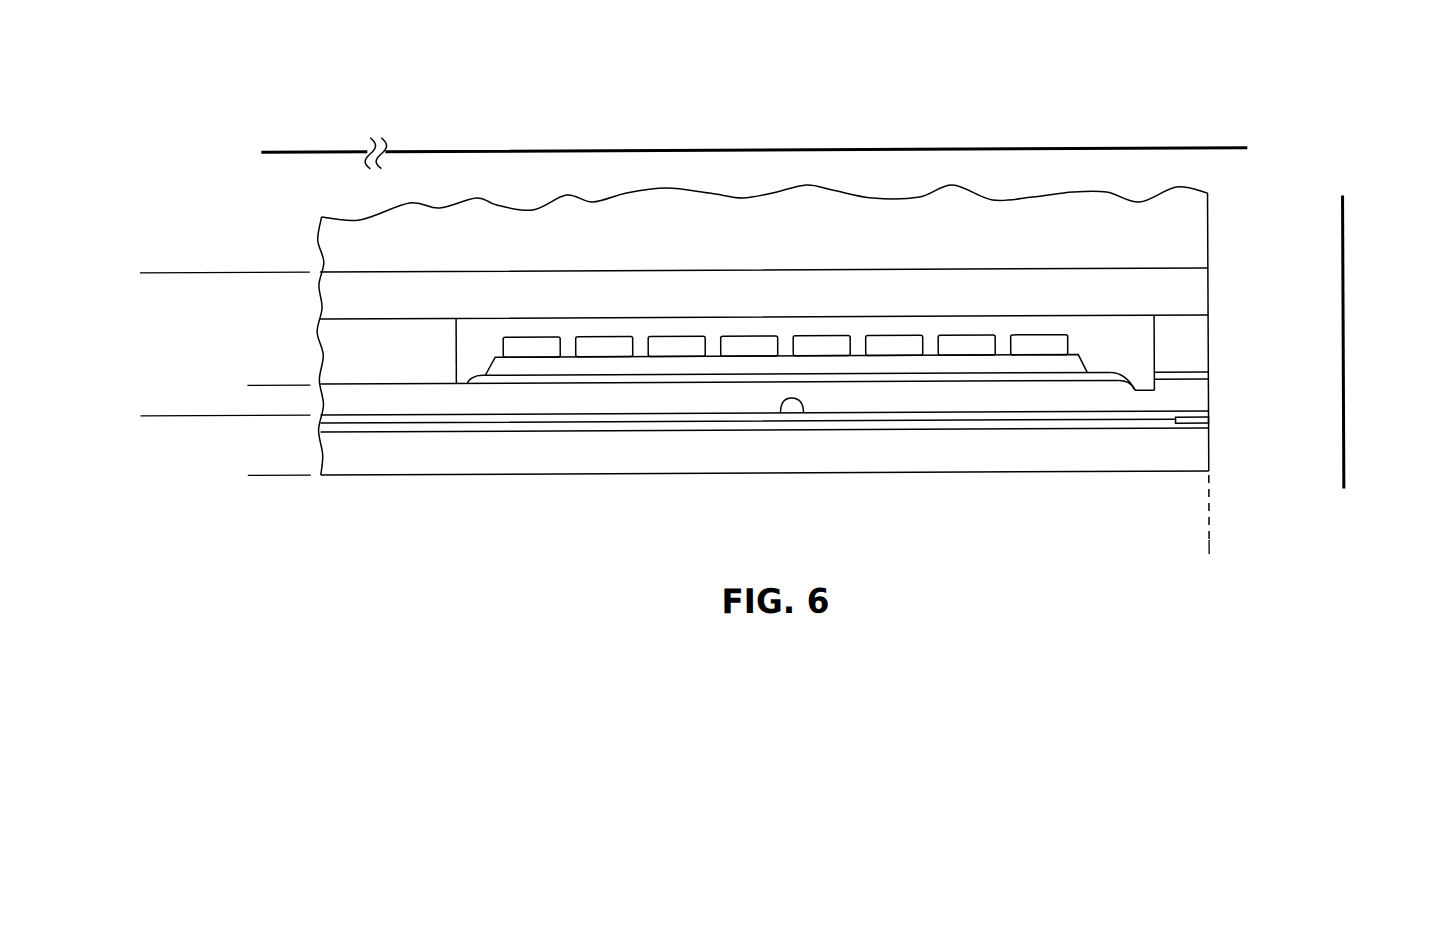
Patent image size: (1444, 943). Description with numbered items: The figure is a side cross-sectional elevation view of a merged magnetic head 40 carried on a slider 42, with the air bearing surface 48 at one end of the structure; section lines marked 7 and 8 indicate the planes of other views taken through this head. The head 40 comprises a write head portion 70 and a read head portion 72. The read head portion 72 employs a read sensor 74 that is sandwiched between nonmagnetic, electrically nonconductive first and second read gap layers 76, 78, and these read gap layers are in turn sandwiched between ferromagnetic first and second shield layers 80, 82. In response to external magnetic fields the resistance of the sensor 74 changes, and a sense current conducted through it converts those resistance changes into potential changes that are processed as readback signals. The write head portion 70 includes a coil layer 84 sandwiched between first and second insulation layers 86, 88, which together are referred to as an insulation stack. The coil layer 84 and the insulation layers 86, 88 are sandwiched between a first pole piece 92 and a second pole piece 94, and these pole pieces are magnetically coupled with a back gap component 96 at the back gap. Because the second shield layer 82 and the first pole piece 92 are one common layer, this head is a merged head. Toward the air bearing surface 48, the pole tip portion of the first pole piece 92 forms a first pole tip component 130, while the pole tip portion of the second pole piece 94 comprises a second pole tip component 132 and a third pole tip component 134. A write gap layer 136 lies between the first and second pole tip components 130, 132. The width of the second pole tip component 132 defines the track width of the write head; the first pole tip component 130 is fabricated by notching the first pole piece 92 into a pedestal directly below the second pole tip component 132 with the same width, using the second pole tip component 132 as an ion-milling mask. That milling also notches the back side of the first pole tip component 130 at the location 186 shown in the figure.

The section line 8- 8 is at (270, 138).
The section line 7- 7 is at (1362, 208).
The magnetic head 40 is at (294, 226).
The slider 42 is at (1208, 233).
The air bearing surface 48 is at (1208, 551).
The write head portion 70 is at (261, 370).
The read head portion 72 is at (262, 490).
The read sensor 74 is at (1208, 422).
The first read gap layer 76 is at (840, 432).
The second read gap layer 78 is at (779, 415).
The first shield layer 80 is at (930, 457).
The second shield layer 82 is at (764, 461).
The first pole piece 92 is at (1042, 403).
The coil layer 84 is at (829, 342).
The first insulation layer 86 is at (676, 369).
The second insulation layer 88 is at (568, 326).
The second pole piece 94 is at (966, 264).
The back gap component 96 is at (400, 333).
The first pole tip component 130 is at (1208, 399).
The second pole tip component 132 is at (1208, 331).
The third pole tip component 134 is at (1062, 283).
The write gap layer 136 is at (1208, 379).
The notch on back side of first pole tip component 186 is at (1152, 392).